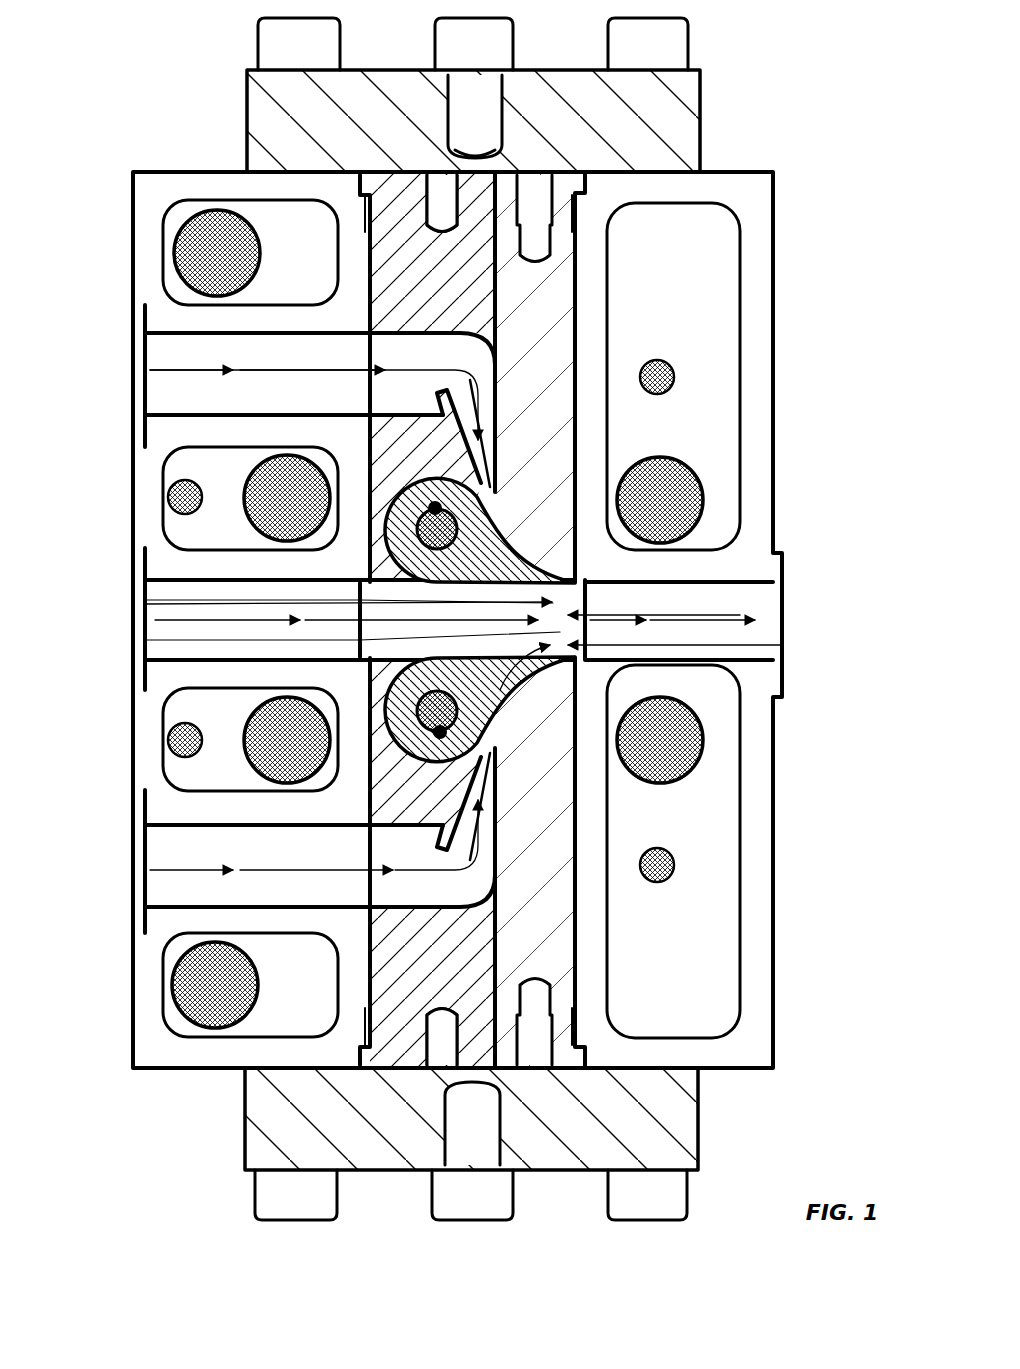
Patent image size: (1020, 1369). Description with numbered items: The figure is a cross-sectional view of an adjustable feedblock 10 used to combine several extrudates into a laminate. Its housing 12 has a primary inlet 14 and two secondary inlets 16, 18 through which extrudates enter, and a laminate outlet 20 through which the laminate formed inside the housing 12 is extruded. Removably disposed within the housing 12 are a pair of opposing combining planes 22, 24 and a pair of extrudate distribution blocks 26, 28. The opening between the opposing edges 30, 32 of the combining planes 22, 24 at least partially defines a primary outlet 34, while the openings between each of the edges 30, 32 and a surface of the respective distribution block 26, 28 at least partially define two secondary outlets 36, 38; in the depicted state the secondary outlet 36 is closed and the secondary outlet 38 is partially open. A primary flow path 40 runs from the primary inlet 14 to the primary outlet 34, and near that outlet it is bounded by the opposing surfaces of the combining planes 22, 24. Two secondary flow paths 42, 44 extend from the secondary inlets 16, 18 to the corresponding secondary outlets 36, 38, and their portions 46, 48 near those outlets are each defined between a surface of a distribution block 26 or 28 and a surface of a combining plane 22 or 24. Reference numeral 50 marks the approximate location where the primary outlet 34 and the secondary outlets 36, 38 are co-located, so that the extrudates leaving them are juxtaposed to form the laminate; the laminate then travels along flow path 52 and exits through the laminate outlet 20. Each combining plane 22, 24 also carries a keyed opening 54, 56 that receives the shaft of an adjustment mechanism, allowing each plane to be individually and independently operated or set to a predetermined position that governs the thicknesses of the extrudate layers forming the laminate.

The adjustable feedblock 10 is at (455, 619).
The housing 12 is at (457, 619).
The primary inlet 14 is at (140, 645).
The secondary inlet 16 is at (150, 402).
The secondary inlet 18 is at (190, 870).
The laminate outlet 20 is at (777, 623).
The combining plane 22 is at (395, 560).
The combining plane 24 is at (395, 755).
The extrudate distribution block 26 is at (415, 258).
The extrudate distribution block 28 is at (397, 945).
The opposing edge 30 is at (600, 617).
The opposing edge 32 is at (565, 632).
The primary outlet 34 is at (600, 617).
The secondary outlet 36 is at (586, 572).
The secondary outlet 38 is at (565, 655).
The primary flow path 40 is at (145, 625).
The secondary flow path 42 is at (175, 370).
The secondary flow path 44 is at (150, 903).
The portion of secondary flow path 46 is at (500, 512).
The portion of secondary flow path 48 is at (560, 667).
The co-location of outlets 50 is at (145, 604).
The flow path 52 is at (727, 618).
The keyed opening 54 is at (297, 503).
The keyed opening 56 is at (441, 735).